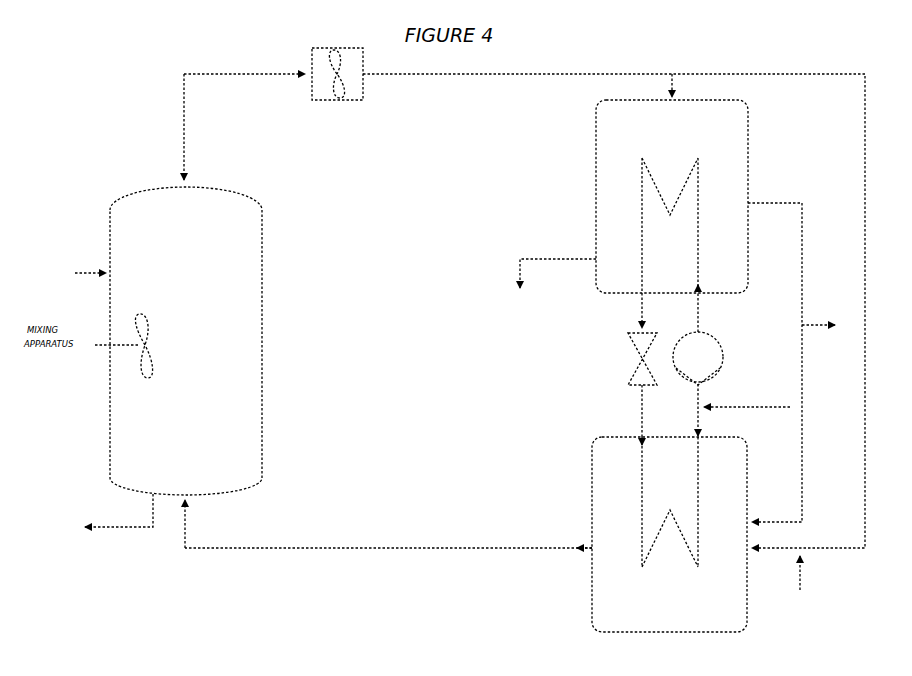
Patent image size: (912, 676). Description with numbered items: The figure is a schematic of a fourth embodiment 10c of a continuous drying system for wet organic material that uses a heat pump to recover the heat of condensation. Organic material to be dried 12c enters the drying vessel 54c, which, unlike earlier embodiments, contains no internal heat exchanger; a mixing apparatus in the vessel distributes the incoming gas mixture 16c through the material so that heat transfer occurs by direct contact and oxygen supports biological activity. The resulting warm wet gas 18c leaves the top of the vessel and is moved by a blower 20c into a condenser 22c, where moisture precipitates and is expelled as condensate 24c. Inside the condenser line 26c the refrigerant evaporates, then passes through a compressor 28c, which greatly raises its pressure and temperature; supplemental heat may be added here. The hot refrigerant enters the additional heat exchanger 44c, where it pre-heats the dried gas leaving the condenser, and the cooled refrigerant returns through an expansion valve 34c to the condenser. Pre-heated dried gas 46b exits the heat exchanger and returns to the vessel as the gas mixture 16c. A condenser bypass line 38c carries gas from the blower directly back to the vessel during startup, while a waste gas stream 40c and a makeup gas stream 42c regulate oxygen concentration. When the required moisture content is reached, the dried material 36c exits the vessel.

The fourth embodiment of continuous drying system 10c is at (90, 99).
The organic material to be dried 12c is at (75, 274).
The gas mixture 16c is at (199, 524).
The warm wet gas 18c is at (198, 127).
The blower 20c is at (338, 84).
The condenser 22c is at (672, 183).
The condensate 24c is at (561, 277).
The condenser line 26c is at (712, 303).
The compressor 28c is at (745, 328).
The expansion valve 34c is at (590, 369).
The dried material 36c is at (115, 530).
The condenser bypass line 38c is at (862, 137).
The waste gas stream 40c is at (808, 362).
The makeup gas stream 42c is at (791, 494).
The additional heat exchanger 44c is at (669, 534).
The pre-heated dried gas 46b is at (388, 529).
The drying vessel 54c is at (186, 341).